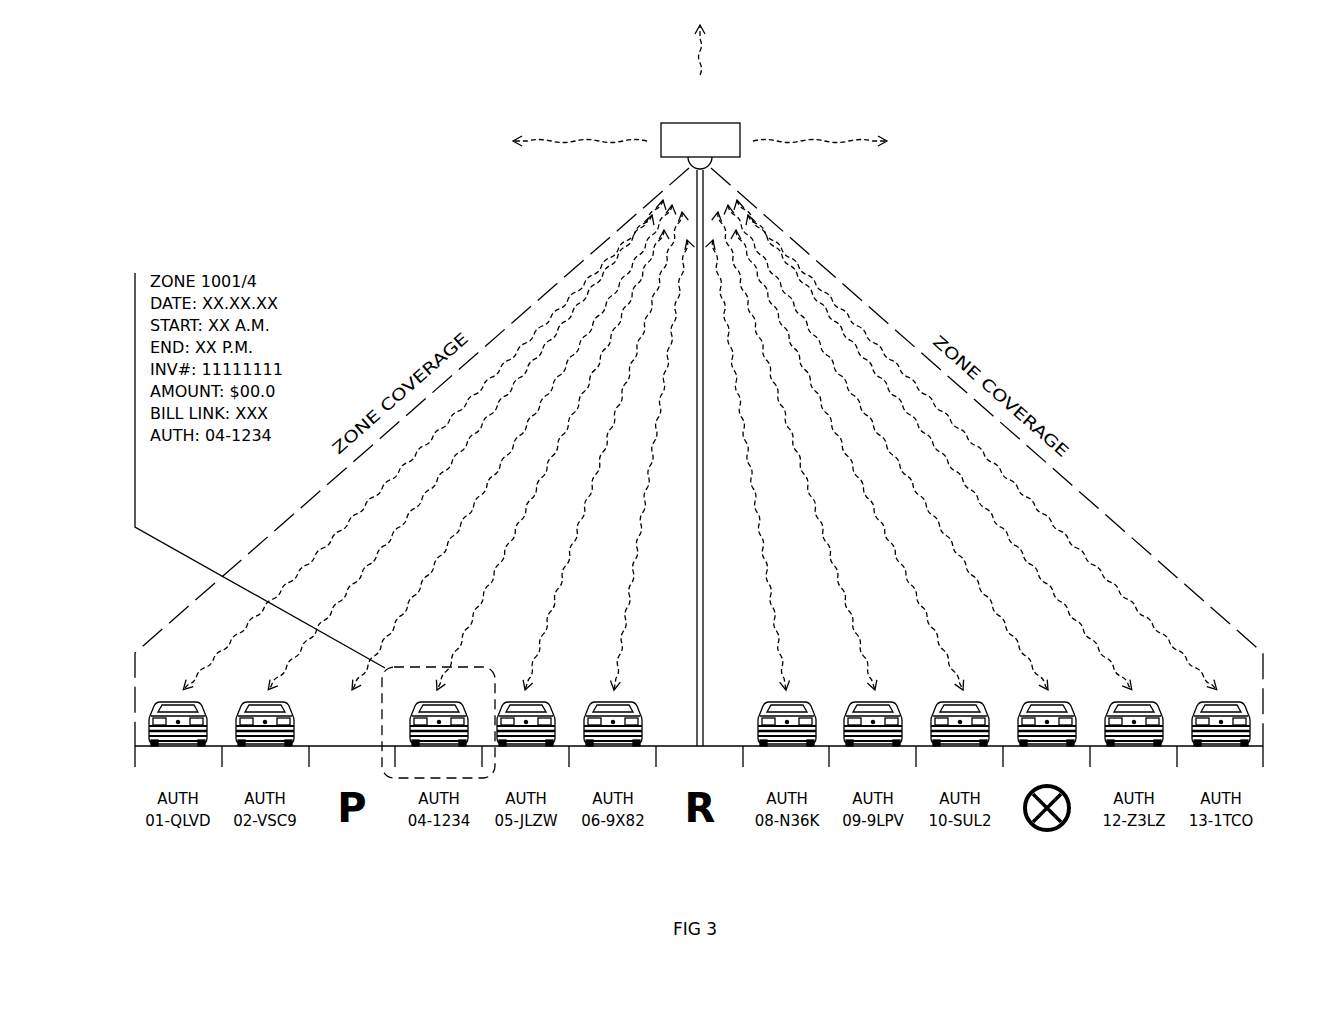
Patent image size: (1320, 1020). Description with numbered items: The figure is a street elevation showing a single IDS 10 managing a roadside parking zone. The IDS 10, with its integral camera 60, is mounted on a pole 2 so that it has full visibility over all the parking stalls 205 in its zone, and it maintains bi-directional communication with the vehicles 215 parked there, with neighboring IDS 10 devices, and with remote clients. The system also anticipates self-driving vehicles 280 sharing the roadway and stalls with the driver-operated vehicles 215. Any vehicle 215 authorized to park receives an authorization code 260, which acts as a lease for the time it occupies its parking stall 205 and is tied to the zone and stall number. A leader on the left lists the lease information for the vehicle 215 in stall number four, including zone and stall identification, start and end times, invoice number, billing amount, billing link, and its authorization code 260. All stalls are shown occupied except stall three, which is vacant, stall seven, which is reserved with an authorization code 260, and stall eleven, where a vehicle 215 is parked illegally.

The IDS 10 is at (748, 125).
The self-driving vehicle 280 is at (644, 90).
The integral camera 60 is at (688, 164).
The pole 2 is at (704, 590).
The parking stall 205 is at (321, 746).
The vehicle 215 is at (1278, 681).
The authorization code 260 is at (661, 862).